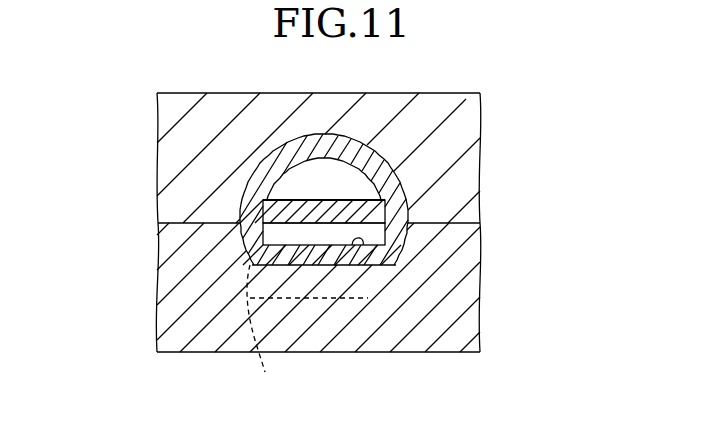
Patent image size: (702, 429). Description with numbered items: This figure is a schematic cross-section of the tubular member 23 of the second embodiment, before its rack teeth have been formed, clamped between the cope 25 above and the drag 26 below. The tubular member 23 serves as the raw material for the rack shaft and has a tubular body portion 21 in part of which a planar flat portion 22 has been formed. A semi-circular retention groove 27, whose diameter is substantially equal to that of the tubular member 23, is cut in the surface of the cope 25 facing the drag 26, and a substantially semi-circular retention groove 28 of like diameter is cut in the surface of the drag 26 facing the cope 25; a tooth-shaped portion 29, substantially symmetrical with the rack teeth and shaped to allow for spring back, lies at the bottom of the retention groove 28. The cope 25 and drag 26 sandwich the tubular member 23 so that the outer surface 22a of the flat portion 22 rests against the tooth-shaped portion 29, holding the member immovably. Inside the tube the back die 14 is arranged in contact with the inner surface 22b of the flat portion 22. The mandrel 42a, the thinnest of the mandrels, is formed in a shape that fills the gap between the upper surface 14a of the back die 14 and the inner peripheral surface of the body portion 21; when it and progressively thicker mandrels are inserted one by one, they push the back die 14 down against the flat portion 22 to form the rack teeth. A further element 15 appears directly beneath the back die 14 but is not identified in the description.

The back die 14 is at (370, 210).
The upper surface 14a is at (362, 199).
The insulating layer 15 is at (387, 241).
The body portion 21 is at (279, 152).
The flat portion 22 is at (335, 266).
The outer surface 22a is at (362, 249).
The inner surface 22b is at (362, 266).
The tubular member 23 is at (352, 174).
The cope 25 is at (164, 114).
The drag 26 is at (164, 313).
The retention groove 27 is at (249, 178).
The retention groove 28 is at (248, 253).
The tooth-shaped portion 29 is at (307, 328).
The mandrel 42a is at (372, 183).